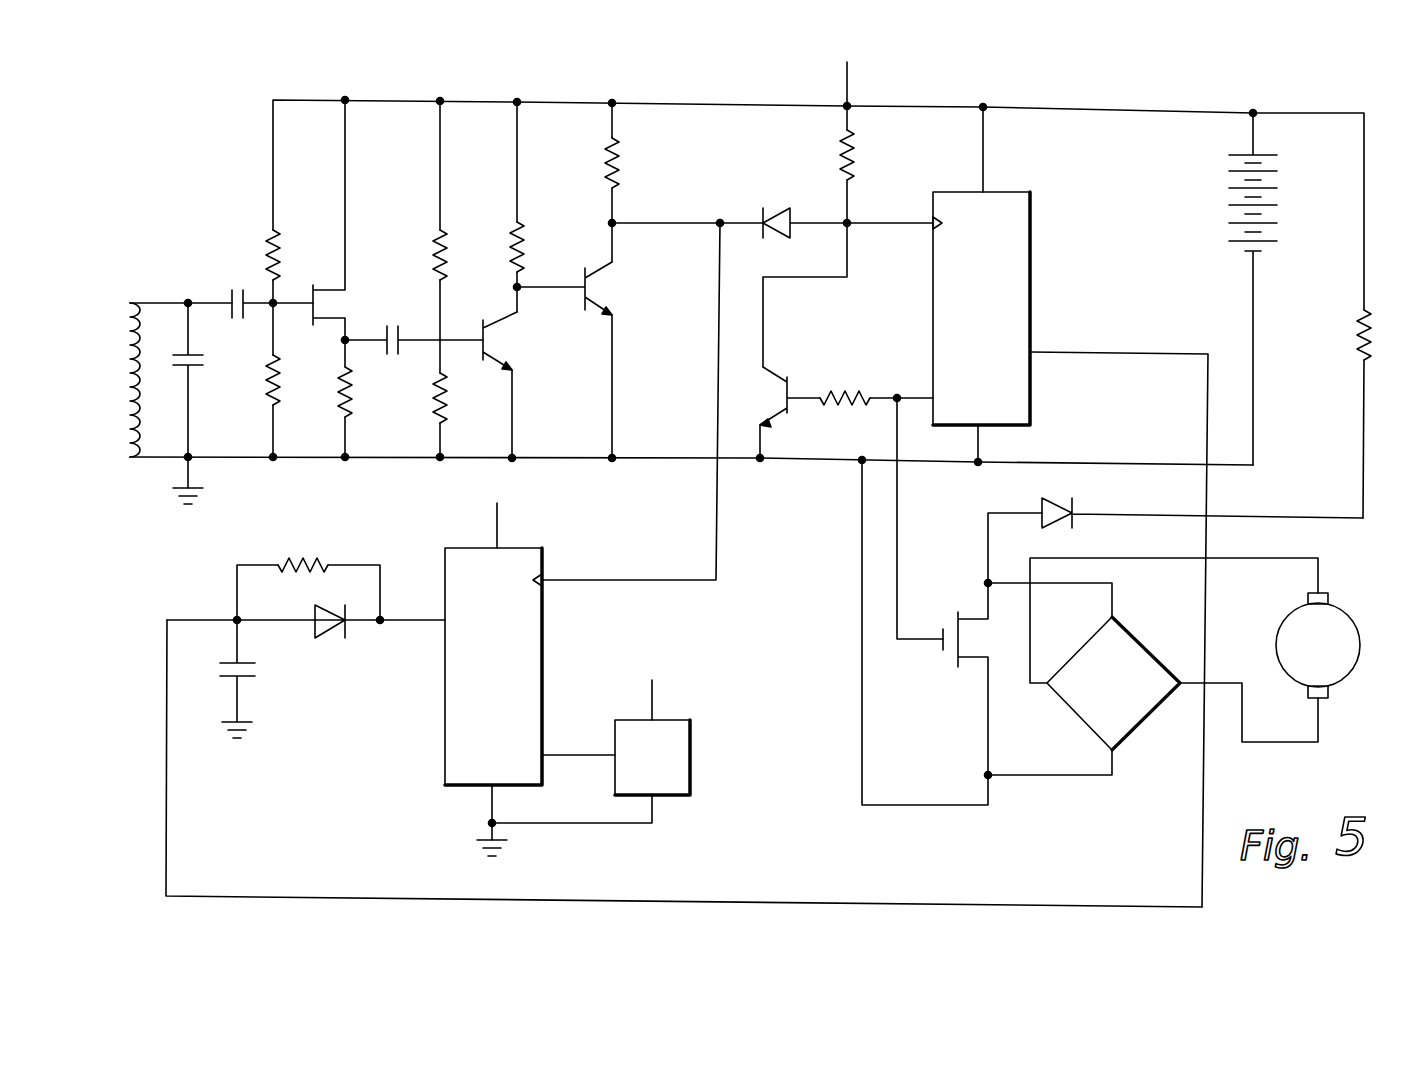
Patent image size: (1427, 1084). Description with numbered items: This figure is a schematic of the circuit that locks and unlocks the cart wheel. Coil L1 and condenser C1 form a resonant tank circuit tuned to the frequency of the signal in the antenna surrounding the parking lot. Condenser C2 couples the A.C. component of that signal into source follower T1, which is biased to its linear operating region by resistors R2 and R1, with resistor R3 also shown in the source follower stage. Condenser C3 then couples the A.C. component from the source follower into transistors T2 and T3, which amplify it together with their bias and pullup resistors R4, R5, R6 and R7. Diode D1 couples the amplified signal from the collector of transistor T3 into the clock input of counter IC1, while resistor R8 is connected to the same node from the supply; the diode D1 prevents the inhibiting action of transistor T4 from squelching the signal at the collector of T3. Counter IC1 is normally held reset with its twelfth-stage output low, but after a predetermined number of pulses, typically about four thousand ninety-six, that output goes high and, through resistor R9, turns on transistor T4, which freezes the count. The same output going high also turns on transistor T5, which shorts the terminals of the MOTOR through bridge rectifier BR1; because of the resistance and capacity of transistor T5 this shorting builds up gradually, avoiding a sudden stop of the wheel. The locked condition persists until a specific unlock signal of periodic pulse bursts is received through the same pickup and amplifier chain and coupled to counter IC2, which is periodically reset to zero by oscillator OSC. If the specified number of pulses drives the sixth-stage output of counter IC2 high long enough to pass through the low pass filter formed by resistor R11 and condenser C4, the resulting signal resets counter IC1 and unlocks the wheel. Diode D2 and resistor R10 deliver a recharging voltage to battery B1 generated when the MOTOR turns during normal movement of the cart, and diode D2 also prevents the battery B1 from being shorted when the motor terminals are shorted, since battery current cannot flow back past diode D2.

The coil L1 is at (157, 380).
The condenser C1 is at (199, 402).
The condenser C2 is at (255, 290).
The condenser C3 is at (414, 354).
The condenser C4 is at (253, 679).
The resistor R1 is at (290, 406).
The resistor R2 is at (292, 292).
The resistor R3 is at (361, 412).
The resistor R4 is at (457, 415).
The resistor R5 is at (457, 237).
The resistor R6 is at (536, 207).
The resistor R7 is at (633, 182).
The resistor R8 is at (832, 204).
The resistor R9 is at (881, 500).
The resistor R10 is at (1335, 414).
The resistor R11 is at (309, 575).
The source follower T1 is at (345, 233).
The transistor T2 is at (514, 385).
The transistor T3 is at (582, 360).
The transistor T4 is at (790, 412).
The transistor T5 is at (952, 632).
The diode D1 is at (772, 207).
The diode D2 is at (1202, 504).
The counter IC1 is at (1070, 507).
The counter IC2 is at (530, 675).
The oscillator OSC is at (595, 747).
The battery B1 is at (1229, 289).
The bridge rectifier BR1 is at (1153, 666).
The motor MOTOR is at (1318, 645).